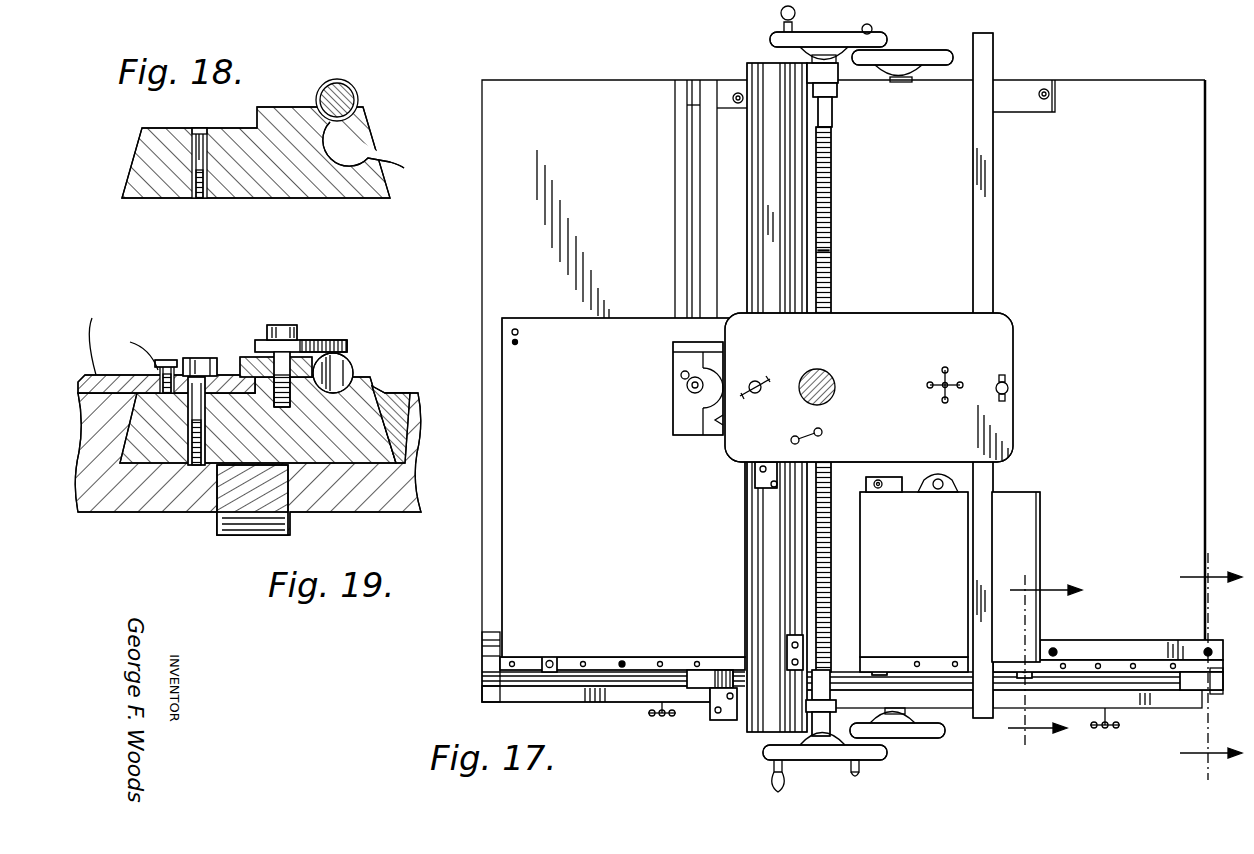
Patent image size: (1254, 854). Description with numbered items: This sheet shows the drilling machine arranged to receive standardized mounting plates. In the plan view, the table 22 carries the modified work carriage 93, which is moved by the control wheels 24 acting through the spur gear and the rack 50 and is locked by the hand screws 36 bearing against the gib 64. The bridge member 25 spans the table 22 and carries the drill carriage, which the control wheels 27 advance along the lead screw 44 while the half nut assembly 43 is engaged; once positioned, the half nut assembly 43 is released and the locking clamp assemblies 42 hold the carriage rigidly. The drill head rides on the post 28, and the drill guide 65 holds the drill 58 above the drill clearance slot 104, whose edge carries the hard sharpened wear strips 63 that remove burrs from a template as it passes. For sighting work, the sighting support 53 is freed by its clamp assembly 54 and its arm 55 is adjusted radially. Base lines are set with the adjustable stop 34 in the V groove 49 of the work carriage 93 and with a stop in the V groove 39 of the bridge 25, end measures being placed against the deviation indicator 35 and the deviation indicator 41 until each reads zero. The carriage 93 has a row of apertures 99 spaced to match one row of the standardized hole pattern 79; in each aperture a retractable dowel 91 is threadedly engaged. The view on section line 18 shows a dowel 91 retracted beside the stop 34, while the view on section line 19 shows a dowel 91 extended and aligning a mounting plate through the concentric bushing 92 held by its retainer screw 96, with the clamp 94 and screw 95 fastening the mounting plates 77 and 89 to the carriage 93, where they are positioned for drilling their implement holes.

In FIG. 17, the section line 18- 18 is at (1211, 660).
In FIG. 17, the section line 19- 19 is at (1044, 659).
In FIG. 19, the table 22 is at (420, 476).
In FIG. 17, the table 22 is at (563, 80).
In FIG. 17, the control wheels 24 is at (925, 52).
In FIG. 17, the bridge member 25 is at (831, 150).
In FIG. 17, the control wheels 27 is at (770, 40).
In FIG. 17, the post 28 is at (830, 358).
In FIG. 18, the adjustable stop 34 is at (352, 84).
In FIG. 19, the adjustable stop 34 is at (340, 355).
In FIG. 17, the adjustable stop 34 is at (1200, 690).
In FIG. 17, the deviation indicator 35 is at (700, 678).
In FIG. 17, the hand screws 36 is at (660, 718).
In FIG. 17, the V groove 39 is at (806, 175).
In FIG. 17, the deviation indicator 41 is at (772, 487).
In FIG. 17, the locking clamp assemblies 42 is at (757, 380).
In FIG. 17, the half nut assembly 43 is at (822, 433).
In FIG. 17, the lead screw 44 is at (831, 242).
In FIG. 18, the V groove 49 is at (377, 152).
In FIG. 17, the V groove 49 is at (1137, 690).
In FIG. 19, the rack 50 is at (240, 518).
In FIG. 17, the sighting support 53 is at (942, 494).
In FIG. 17, the clamp assembly 54 is at (938, 382).
In FIG. 17, the arm 55 is at (880, 494).
In FIG. 17, the drill 58 is at (688, 385).
In FIG. 17, the wear strips 63 is at (705, 80).
In FIG. 19, the gib 64 is at (400, 420).
In FIG. 17, the drill guide 65 is at (673, 346).
In FIG. 17, the mounting plate 77 is at (620, 318).
In FIG. 19, the standardized hole pattern 79 is at (152, 380).
In FIG. 17, the standardized hole pattern 79 is at (519, 332).
In FIG. 19, the mounting plate 89 is at (91, 336).
In FIG. 17, the mounting plate 89 is at (1041, 538).
In FIG. 18, the retractable dowel 91 is at (199, 128).
In FIG. 19, the retractable dowel 91 is at (205, 358).
In FIG. 19, the concentric bushing 92 is at (170, 360).
In FIG. 17, the concentric bushing 92 is at (551, 656).
In FIG. 18, the modified work carriage 93 is at (362, 152).
In FIG. 19, the modified work carriage 93 is at (372, 380).
In FIG. 17, the modified work carriage 93 is at (534, 672).
In FIG. 19, the clamp 94 is at (248, 357).
In FIG. 17, the clamp 94 is at (560, 662).
In FIG. 19, the screw 95 is at (292, 345).
In FIG. 19, the retainer screw 96 is at (129, 350).
In FIG. 17, the retainer screw 96 is at (514, 637).
In FIG. 18, the apertures 99 is at (192, 158).
In FIG. 17, the apertures 99 is at (1206, 652).
In FIG. 17, the drill clearance slot 104 is at (690, 140).